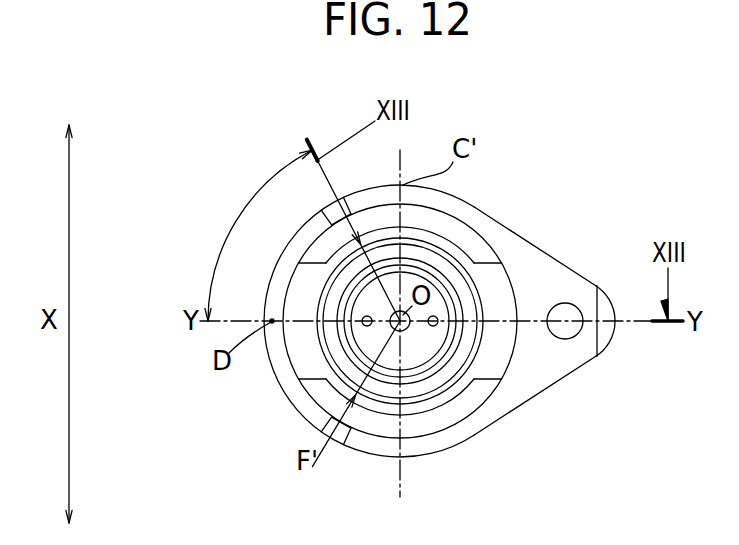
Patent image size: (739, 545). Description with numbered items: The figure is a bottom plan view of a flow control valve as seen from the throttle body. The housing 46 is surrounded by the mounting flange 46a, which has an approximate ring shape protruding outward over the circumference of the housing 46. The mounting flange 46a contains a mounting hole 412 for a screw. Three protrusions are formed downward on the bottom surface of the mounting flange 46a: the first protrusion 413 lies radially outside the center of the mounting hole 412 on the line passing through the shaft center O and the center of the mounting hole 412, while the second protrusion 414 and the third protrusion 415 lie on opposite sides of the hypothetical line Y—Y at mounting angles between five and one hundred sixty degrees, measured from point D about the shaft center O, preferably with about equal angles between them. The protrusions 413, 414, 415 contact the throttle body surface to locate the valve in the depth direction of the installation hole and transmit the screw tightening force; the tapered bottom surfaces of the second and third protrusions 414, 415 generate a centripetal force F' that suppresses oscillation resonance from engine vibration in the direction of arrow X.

The housing 46 is at (490, 425).
The mounting flange 46a is at (436, 453).
The mounting hole 412 is at (566, 340).
The first protrusion 413 is at (606, 334).
The second protrusion 414 is at (338, 209).
The third protrusion 415 is at (340, 434).